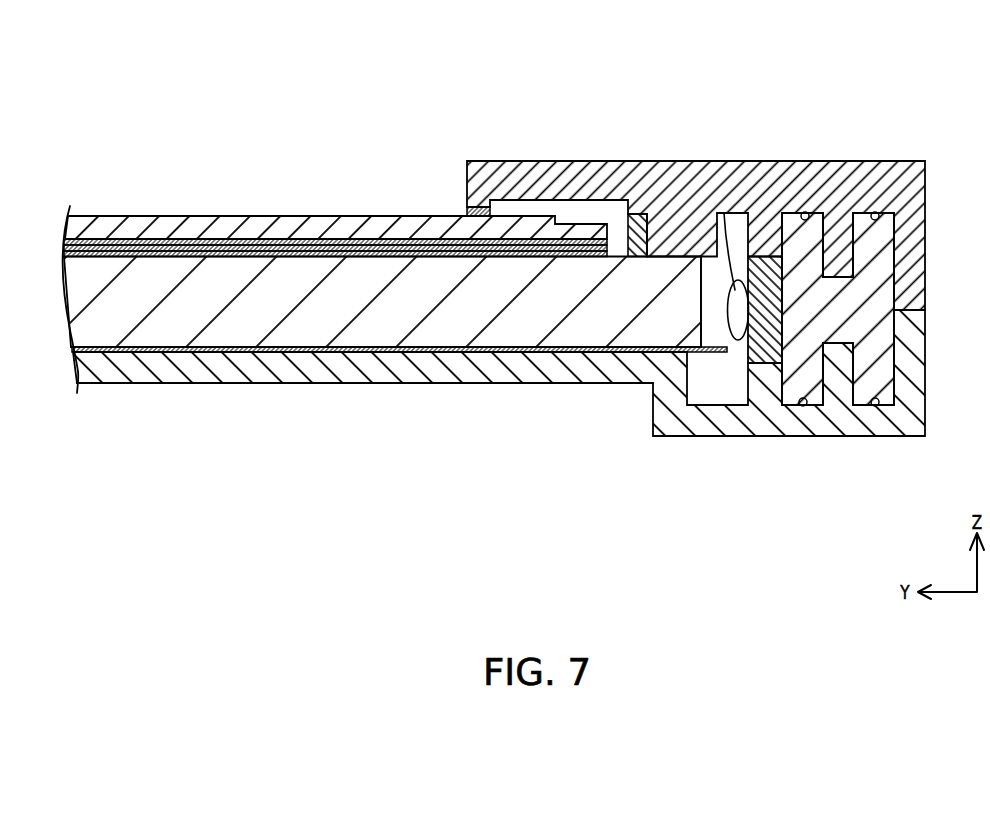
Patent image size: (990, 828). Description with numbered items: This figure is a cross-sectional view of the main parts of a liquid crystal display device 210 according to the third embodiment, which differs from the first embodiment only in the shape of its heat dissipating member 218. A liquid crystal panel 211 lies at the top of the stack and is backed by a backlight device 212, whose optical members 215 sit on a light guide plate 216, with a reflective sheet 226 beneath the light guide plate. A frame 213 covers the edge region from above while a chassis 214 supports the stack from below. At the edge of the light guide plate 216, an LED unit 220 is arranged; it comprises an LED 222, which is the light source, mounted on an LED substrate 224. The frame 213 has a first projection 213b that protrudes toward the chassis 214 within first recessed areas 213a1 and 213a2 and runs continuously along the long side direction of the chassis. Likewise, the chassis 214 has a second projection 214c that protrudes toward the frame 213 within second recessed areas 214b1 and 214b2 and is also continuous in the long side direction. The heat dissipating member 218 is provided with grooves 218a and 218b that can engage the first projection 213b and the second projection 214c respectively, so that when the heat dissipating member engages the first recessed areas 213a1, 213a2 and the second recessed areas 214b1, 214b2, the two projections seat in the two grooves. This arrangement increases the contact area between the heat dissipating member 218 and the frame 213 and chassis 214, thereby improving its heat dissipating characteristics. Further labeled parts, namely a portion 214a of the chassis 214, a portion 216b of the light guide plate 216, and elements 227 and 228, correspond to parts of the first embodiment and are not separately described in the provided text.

The liquid crystal display device 210 is at (342, 102).
The liquid crystal panel 211 is at (172, 223).
The backlight device 212 is at (374, 459).
The frame 213 is at (674, 187).
The first recessed area 213a1 is at (805, 211).
The first recessed area 213a2 is at (875, 211).
The first projection 213b is at (816, 243).
The chassis 214 is at (318, 384).
The lower frame bottom plate 214a is at (228, 370).
The second recessed area 214b1 is at (811, 407).
The second recessed area 214b2 is at (880, 408).
The second projection 214c is at (858, 365).
The optical members 215 is at (372, 253).
The light guide plate 216 is at (548, 318).
The light guide plate end face 216b is at (700, 318).
The heat dissipating member 218 is at (873, 298).
The groove 218a is at (842, 277).
The groove 218b is at (840, 352).
The LED unit 220 is at (791, 97).
The LED 222 is at (725, 212).
The LED substrate 224 is at (764, 292).
The reflective sheet 226 is at (486, 352).
The first adhesive 227 is at (477, 208).
The second adhesive 228 is at (637, 213).